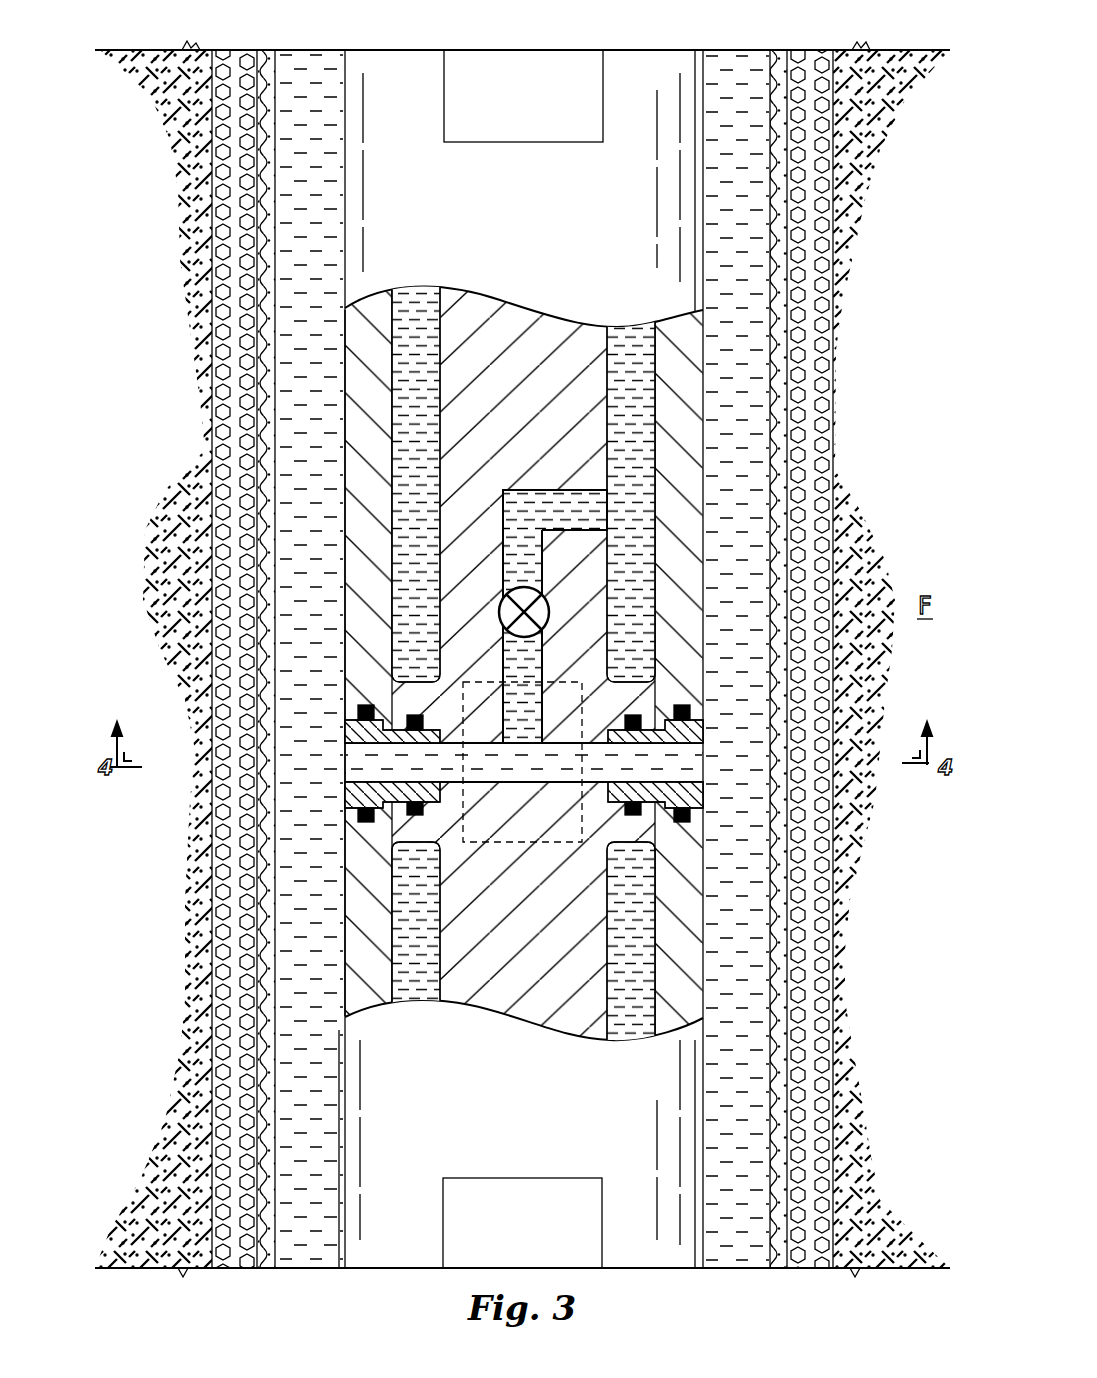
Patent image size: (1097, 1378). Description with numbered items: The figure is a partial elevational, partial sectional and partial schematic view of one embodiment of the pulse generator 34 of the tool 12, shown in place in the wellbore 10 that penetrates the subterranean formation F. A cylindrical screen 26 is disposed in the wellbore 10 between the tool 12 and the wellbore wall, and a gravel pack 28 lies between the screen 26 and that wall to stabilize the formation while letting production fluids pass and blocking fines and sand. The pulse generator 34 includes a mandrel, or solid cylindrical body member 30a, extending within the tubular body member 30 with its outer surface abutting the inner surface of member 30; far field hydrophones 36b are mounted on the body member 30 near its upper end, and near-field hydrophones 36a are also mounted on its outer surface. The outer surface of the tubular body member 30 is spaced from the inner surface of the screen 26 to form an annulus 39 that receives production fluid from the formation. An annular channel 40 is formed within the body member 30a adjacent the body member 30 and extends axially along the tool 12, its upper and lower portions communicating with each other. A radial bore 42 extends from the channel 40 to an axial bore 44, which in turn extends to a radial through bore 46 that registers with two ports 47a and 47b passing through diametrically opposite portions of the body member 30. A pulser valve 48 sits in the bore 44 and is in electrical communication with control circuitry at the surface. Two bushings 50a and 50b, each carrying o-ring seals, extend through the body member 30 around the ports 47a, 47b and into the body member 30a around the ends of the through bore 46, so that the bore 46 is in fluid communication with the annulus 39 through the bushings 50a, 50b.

The wellbore 10 is at (812, 56).
The tool 12 is at (338, 1252).
The cylindrical screen 26 is at (272, 76).
The gravel pack 28 is at (834, 400).
The tubular body member 30 is at (704, 447).
The solid cylindrical body member 30a is at (504, 390).
The pulse generator 34 is at (345, 651).
The near-field hydrophones 36a is at (522, 1178).
The far field hydrophones 36b is at (522, 143).
The annulus 39 is at (724, 617).
The annular channel 40 is at (412, 314).
The radial bore 42 is at (535, 489).
The axial bore 44 is at (542, 571).
The radial through bore 46 is at (533, 783).
The port 47a is at (703, 767).
The port 47b is at (345, 767).
The pulser valve 48 is at (497, 614).
The bushing 50a is at (703, 825).
The bushing 50b is at (345, 825).